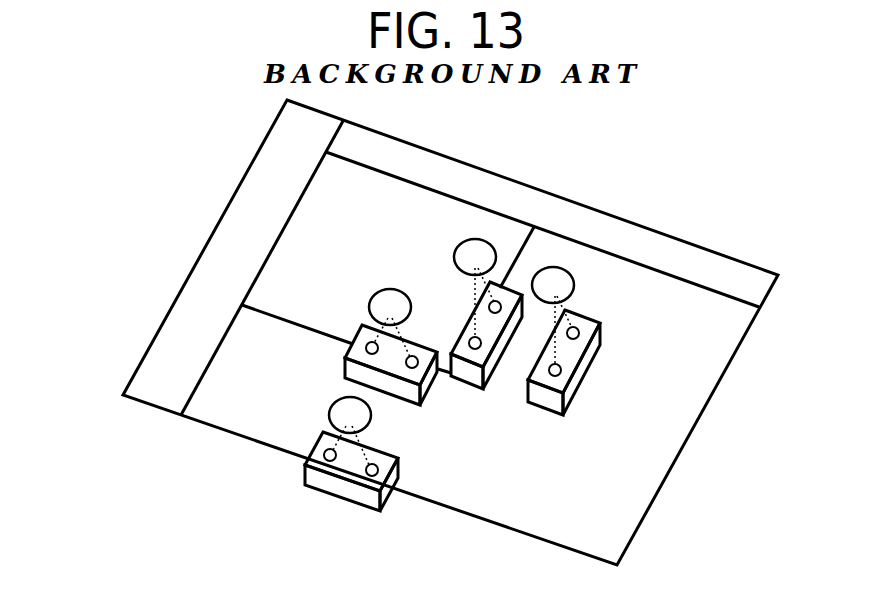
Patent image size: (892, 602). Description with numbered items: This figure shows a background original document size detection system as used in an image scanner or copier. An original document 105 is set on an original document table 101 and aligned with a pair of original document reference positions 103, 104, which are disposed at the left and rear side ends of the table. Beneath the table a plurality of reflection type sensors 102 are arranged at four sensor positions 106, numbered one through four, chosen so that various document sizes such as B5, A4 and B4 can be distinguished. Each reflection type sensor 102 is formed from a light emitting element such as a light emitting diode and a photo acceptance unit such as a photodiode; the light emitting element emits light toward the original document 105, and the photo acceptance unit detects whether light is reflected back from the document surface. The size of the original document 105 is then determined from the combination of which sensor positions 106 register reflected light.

The original document table 101 is at (657, 480).
The reflection type sensor 102 is at (392, 400).
The original document reference position 103 is at (227, 323).
The original document reference position 104 is at (630, 260).
The original document 105 is at (267, 315).
The sensor position 106 is at (368, 306).